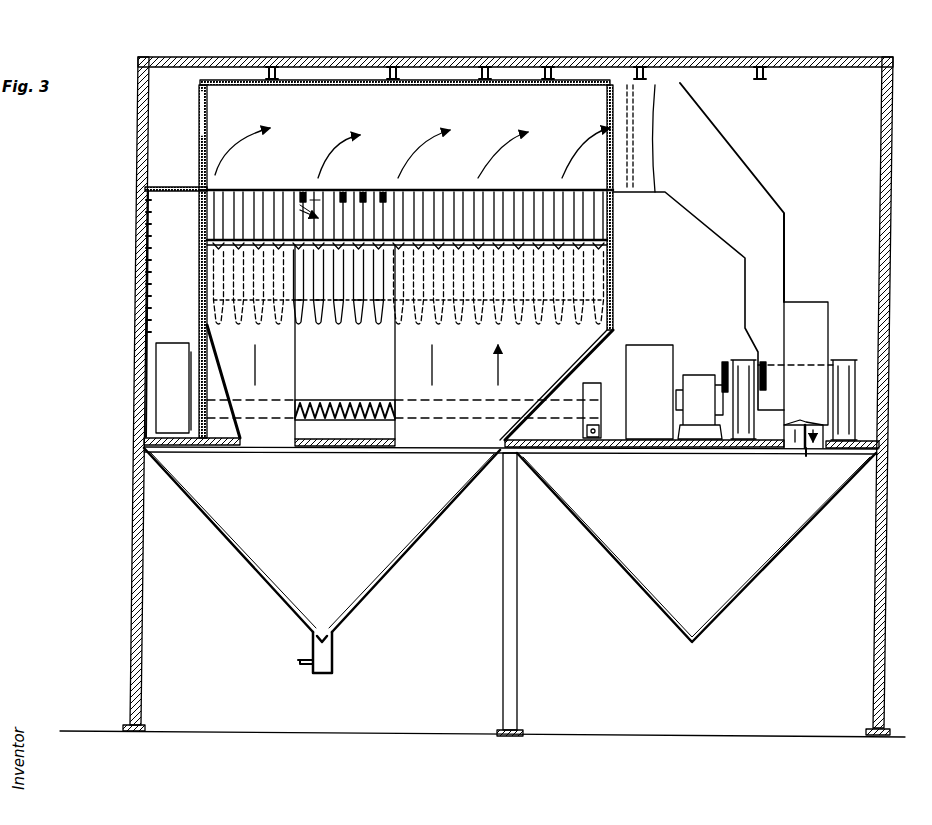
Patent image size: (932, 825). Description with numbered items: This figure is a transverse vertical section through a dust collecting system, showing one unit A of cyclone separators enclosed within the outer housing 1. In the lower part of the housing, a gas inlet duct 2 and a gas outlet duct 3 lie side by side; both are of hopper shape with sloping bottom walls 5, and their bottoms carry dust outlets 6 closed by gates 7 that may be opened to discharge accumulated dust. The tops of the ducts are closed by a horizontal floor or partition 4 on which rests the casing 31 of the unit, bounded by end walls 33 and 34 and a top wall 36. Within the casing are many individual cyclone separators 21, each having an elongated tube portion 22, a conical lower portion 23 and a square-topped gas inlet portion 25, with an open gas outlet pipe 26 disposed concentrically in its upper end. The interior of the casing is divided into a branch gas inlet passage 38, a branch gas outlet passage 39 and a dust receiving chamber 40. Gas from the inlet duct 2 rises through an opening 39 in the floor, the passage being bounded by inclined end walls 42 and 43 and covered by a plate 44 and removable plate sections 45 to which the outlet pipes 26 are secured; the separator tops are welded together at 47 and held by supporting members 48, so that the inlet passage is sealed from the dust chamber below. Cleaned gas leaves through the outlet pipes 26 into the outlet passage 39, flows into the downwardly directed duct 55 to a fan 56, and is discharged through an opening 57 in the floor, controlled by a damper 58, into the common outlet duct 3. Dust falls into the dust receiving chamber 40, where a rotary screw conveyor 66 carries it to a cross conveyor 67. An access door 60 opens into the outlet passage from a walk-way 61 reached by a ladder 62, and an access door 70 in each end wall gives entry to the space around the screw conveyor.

The outer housing 1 is at (138, 228).
The gas inlet duct 2 is at (322, 540).
The gas outlet duct 3 is at (696, 547).
The horizontal floor or partition 4 is at (700, 449).
The sloping bottom walls 5 is at (405, 565).
The dust outlets 6 is at (333, 645).
The gates 7 is at (308, 665).
The cyclone separators 21 is at (372, 325).
The tube portion 22 is at (613, 283).
The conical lower portion 23 is at (585, 313).
The gas inlet portion 25 is at (613, 260).
The gas outlet pipe 26 is at (300, 200).
The casing 31 is at (558, 88).
The end wall 33 is at (207, 218).
The end wall 34 is at (600, 220).
The top wall 36 is at (418, 86).
The branch gas inlet passage 38 is at (464, 362).
The branch gas outlet passage 39 is at (440, 462).
The dust receiving chamber 40 is at (345, 342).
The inclined end wall 42 is at (226, 375).
The inclined end wall 43 is at (572, 372).
The plate 44 is at (238, 190).
The plate sections 45 is at (380, 190).
The secured joint 47 is at (345, 245).
The supporting members 48 is at (215, 248).
The duct 55 is at (757, 195).
The fan 56 is at (818, 302).
The opening 57 is at (792, 455).
The damper 58 is at (805, 456).
The access door 60 is at (199, 120).
The walk-way 61 is at (170, 187).
The ladder 62 is at (146, 278).
The rotary screw conveyor 66 is at (330, 400).
The cross conveyor 67 is at (603, 450).
The access door 70 is at (195, 392).
The cyclone separator unit A is at (580, 186).